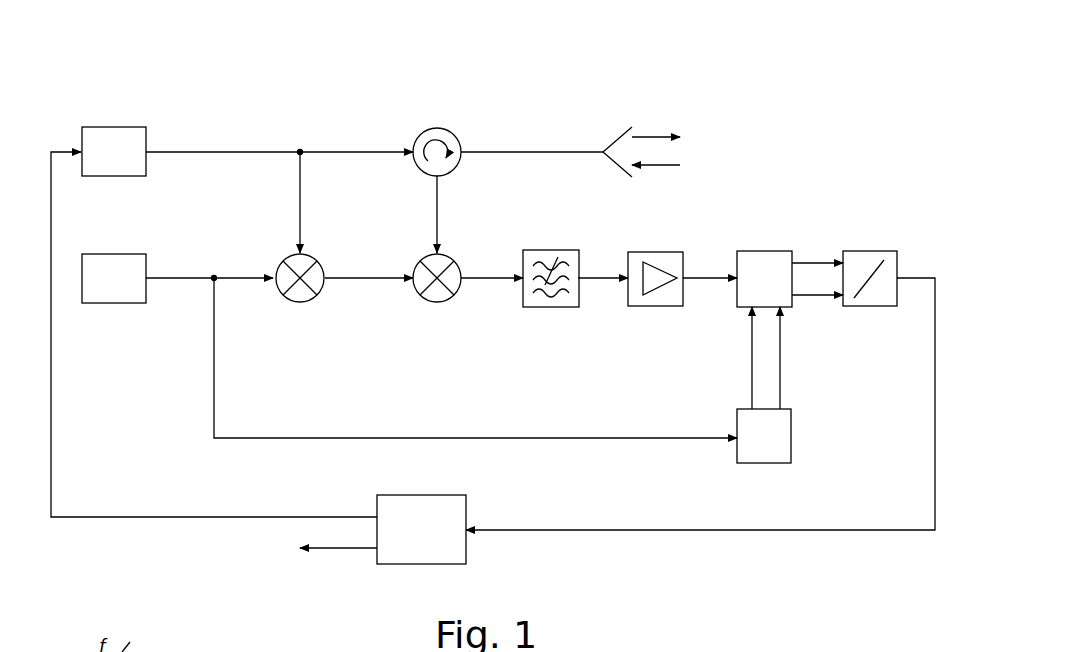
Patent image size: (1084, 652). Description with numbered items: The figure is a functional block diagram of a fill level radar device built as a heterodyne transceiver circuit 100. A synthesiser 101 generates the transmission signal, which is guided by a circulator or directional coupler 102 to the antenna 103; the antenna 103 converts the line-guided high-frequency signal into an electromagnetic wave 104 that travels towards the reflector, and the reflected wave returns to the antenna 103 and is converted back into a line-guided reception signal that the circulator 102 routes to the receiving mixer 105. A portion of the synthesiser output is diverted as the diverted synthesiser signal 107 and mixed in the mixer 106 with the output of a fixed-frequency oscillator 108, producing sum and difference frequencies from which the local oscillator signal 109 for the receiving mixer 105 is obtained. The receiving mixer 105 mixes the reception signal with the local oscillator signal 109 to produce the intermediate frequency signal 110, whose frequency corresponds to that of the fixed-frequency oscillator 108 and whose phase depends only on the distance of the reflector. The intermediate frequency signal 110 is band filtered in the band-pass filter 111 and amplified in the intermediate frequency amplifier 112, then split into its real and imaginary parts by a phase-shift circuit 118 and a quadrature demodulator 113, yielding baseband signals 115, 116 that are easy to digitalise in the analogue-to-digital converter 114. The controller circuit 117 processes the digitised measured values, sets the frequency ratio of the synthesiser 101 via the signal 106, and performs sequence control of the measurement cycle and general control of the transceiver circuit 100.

The transceiver circuit 100 is at (340, 106).
The synthesiser 101 is at (108, 127).
The circulator or directional coupler 102 is at (447, 128).
The antenna 103 is at (617, 127).
The electromagnetic wave 104 is at (668, 127).
The receiving mixer 105 is at (447, 253).
The mixer 106 is at (308, 252).
The diverted synthesiser signal 107 is at (222, 152).
The fixed-frequency oscillator 108 is at (138, 254).
The local oscillator signal 109 is at (383, 280).
The intermediate frequency signal 110 is at (497, 280).
The band-pass filter 111 is at (550, 252).
The intermediate frequency amplifier 112 is at (640, 252).
The quadrature demodulator 113 is at (752, 251).
The analogue-to-digital converter 114 is at (880, 251).
The baseband signal 115 is at (818, 262).
The baseband signal 116 is at (807, 297).
The controller circuit 117 is at (466, 495).
The phase-shift circuit 118 is at (791, 438).